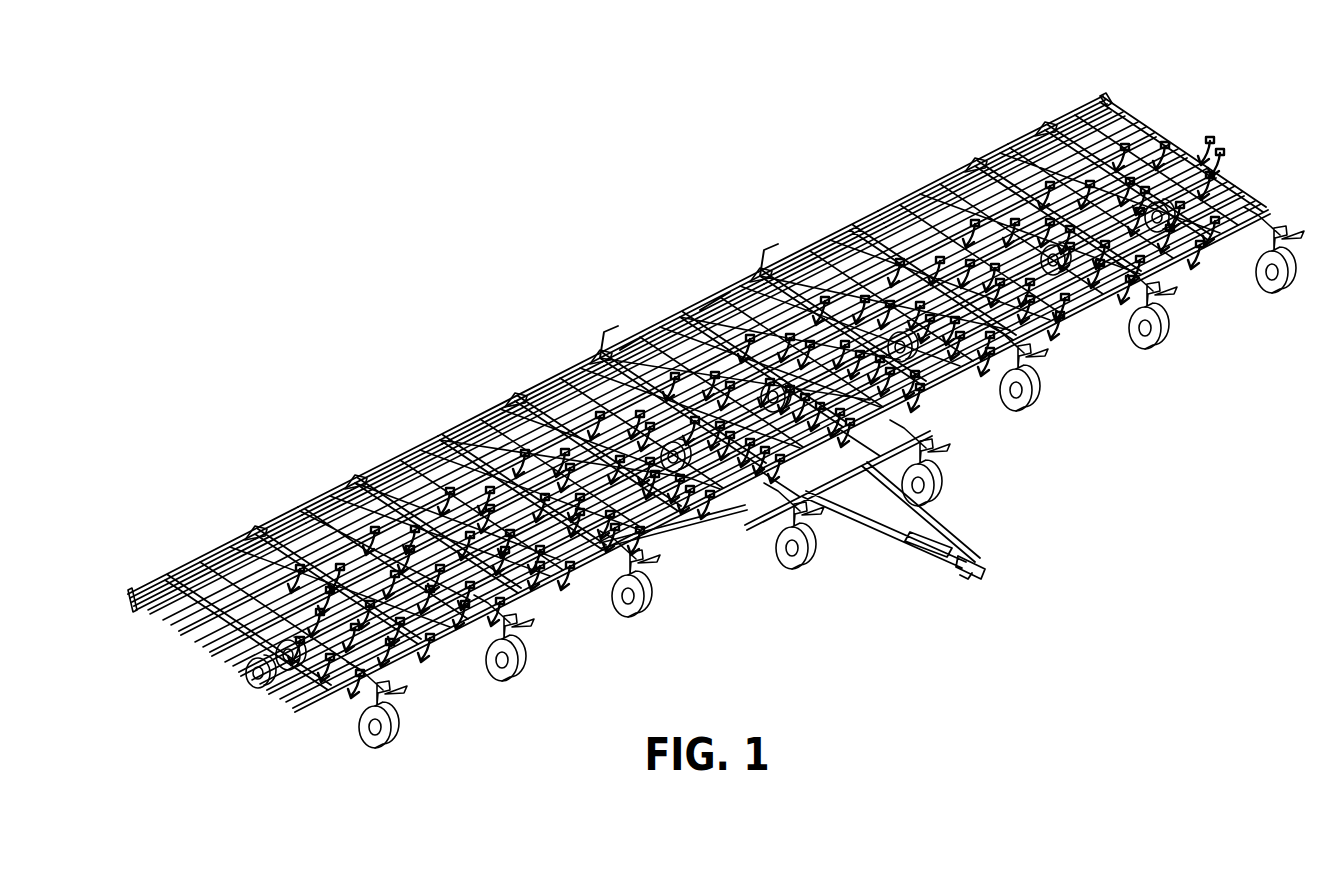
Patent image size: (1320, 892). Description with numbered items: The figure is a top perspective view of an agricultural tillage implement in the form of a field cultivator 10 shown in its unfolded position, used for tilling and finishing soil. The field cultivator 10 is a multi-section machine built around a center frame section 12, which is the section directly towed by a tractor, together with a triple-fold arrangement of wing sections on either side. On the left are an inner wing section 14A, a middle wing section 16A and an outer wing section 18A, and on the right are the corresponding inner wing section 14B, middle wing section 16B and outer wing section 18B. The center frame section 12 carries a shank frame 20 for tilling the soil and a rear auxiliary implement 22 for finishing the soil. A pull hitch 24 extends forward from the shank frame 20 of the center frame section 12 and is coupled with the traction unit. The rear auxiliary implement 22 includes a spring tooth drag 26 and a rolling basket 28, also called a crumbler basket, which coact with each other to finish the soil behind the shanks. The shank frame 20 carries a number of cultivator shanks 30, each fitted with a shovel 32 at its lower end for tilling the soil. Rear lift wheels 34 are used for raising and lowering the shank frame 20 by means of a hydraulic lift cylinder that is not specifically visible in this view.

The field cultivator 10 is at (580, 190).
The center frame section 12 is at (689, 281).
The inner wing section 14A is at (791, 249).
The inner wing section 14B is at (529, 391).
The middle wing section 16A is at (919, 179).
The middle wing section 16B is at (346, 474).
The outer wing section 18A is at (1040, 112).
The outer wing section 18B is at (182, 559).
The shank frame 20 is at (292, 682).
The rear auxiliary implement 22 is at (632, 342).
The pull hitch 24 is at (953, 537).
The spring tooth drag 26 is at (190, 648).
The rolling basket 28 is at (137, 614).
The cultivator shank 30 is at (566, 568).
The shovel 32 is at (586, 588).
The rear lift wheel 34 is at (248, 688).